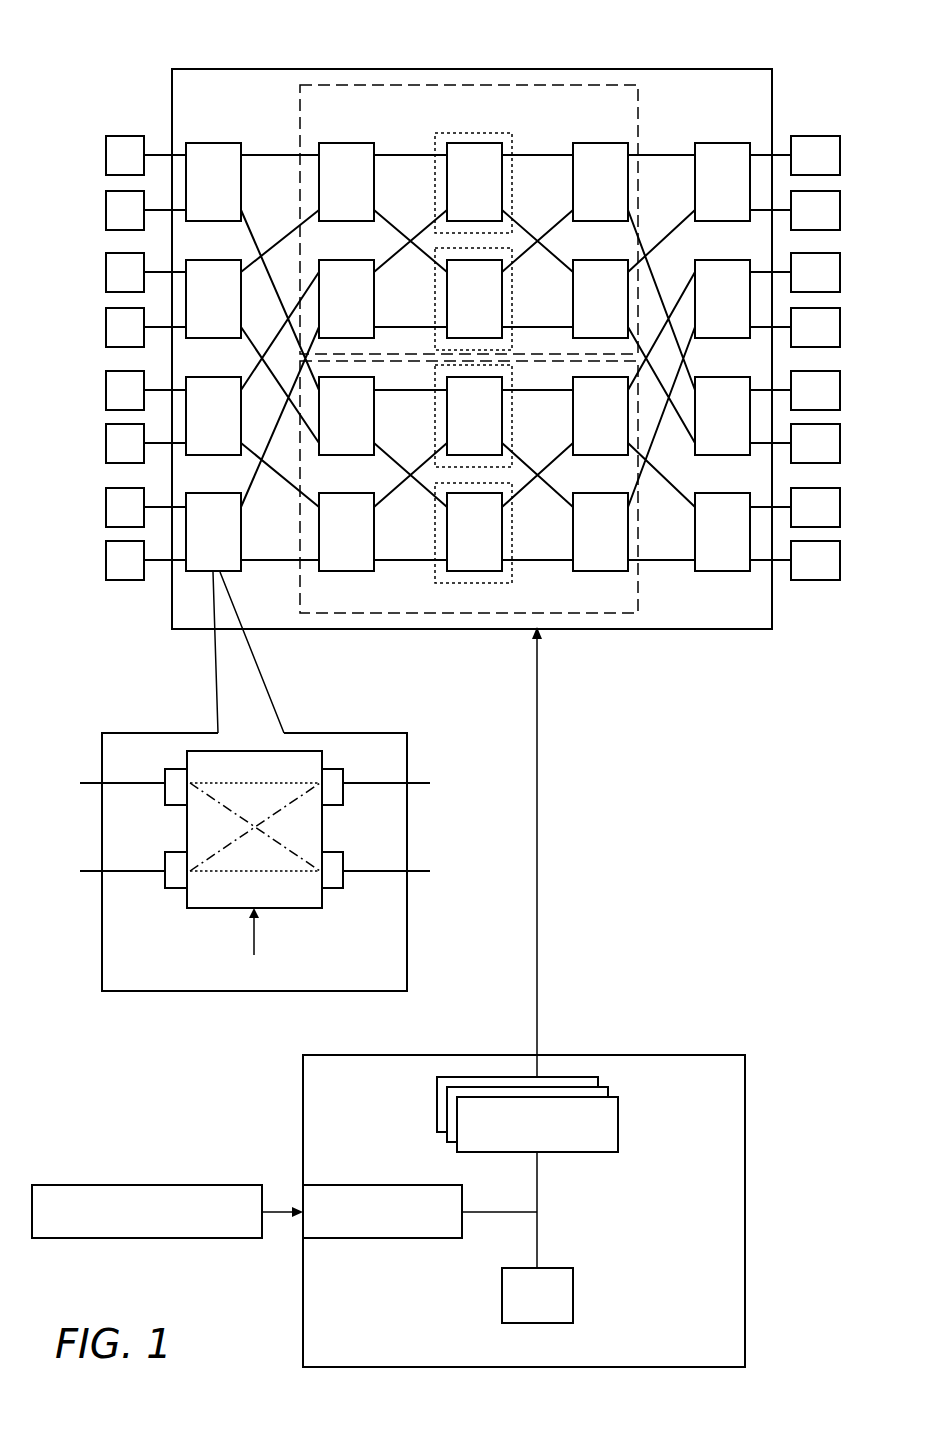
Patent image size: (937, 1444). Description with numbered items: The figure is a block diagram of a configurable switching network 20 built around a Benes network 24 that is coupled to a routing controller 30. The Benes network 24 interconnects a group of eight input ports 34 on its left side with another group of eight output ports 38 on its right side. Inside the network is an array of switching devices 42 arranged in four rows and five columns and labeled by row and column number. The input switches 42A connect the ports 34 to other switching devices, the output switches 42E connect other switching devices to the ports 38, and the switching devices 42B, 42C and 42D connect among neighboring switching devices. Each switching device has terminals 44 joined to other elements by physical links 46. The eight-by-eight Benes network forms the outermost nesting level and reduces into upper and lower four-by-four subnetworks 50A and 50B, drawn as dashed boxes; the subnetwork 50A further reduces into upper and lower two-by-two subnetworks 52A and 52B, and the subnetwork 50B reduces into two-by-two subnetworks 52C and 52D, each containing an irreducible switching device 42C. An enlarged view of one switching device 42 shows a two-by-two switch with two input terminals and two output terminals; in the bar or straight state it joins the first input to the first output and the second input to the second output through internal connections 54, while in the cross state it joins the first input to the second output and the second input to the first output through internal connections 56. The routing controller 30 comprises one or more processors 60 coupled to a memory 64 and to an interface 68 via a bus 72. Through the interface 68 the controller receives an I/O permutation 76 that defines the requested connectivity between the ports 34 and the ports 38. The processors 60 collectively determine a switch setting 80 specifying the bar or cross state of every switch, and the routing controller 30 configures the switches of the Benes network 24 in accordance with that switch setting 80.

The configurable switching network 20 is at (816, 52).
The Benes network 24 is at (190, 69).
The routing controller 30 is at (745, 1262).
The ports 34 is at (115, 358).
The ports 38 is at (827, 358).
The switching device 42 is at (165, 733).
The input switches 42A is at (213, 357).
The switching devices 42B is at (346, 357).
The switching devices 42C is at (474, 357).
The switching devices 42D is at (600, 357).
The output switches 42E is at (722, 357).
The terminals 44 is at (175, 805).
The physical links 46 is at (557, 258).
The upper 4-by-4 subnetwork 50A is at (513, 85).
The lower 4-by-4 subnetwork 50B is at (615, 613).
The upper 2-by-2 subnetwork 52A is at (440, 133).
The lower 2-by-2 subnetwork 52B is at (545, 305).
The upper 2-by-2 subnetwork 52C is at (512, 440).
The lower 2-by-2 subnetwork 52D is at (452, 583).
The internal connections 54 is at (315, 783).
The internal connections 56 is at (228, 808).
The processors 60 is at (598, 1077).
The memory 64 is at (502, 1297).
The interface 68 is at (380, 1185).
The bus 72 is at (537, 1242).
The I/O permutation 76 is at (143, 1185).
The switch setting 80 is at (537, 913).